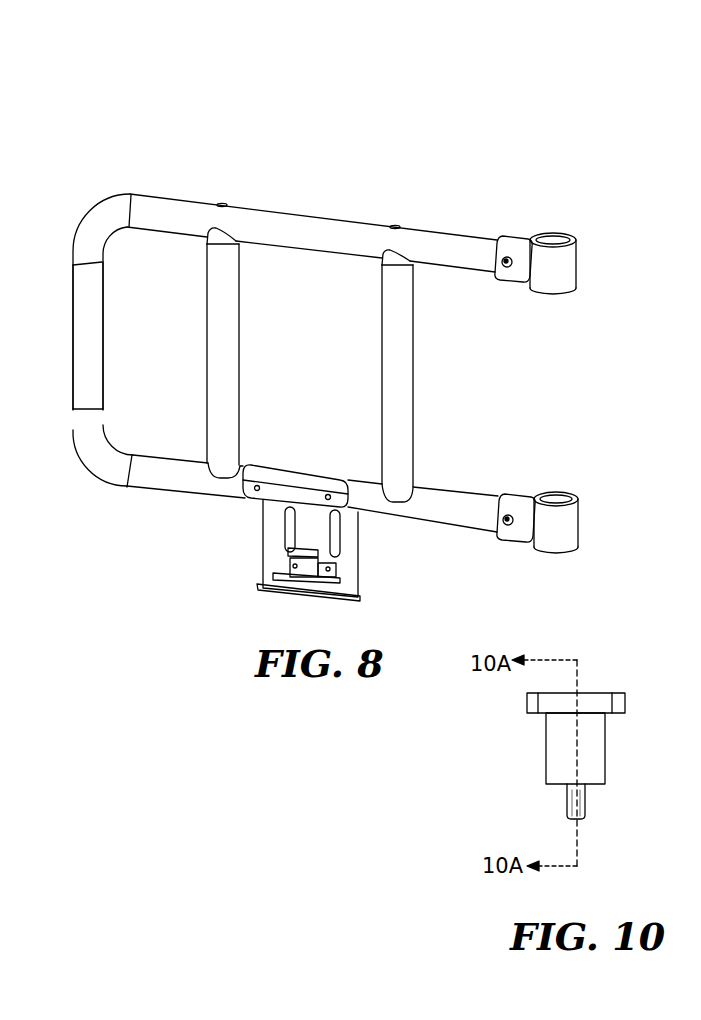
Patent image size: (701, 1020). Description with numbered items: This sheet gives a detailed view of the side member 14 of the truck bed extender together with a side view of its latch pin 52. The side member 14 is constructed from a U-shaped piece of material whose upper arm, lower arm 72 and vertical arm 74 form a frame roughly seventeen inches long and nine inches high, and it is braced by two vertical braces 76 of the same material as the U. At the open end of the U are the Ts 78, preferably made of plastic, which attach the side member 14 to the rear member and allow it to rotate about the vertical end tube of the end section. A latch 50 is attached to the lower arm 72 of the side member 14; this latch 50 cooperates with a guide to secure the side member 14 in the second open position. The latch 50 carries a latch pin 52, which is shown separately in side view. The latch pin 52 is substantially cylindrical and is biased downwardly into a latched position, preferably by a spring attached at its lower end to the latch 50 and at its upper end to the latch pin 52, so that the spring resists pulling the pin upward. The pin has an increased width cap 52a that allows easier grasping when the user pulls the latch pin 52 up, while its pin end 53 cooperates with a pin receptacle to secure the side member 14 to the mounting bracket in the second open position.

In FIG. 8, the side member 14 is at (205, 170).
In FIG. 8, the latch 50 is at (232, 569).
In FIG. 10, the latch pin 52 is at (558, 722).
In FIG. 10, the increased width cap 52a is at (557, 703).
In FIG. 10, the pin end 53 is at (565, 800).
In FIG. 8, the lower arm 72 is at (372, 495).
In FIG. 8, the vertical arm 74 is at (85, 372).
In FIG. 8, the vertical braces 76 is at (220, 380).
In FIG. 8, the Ts 78 is at (560, 277).